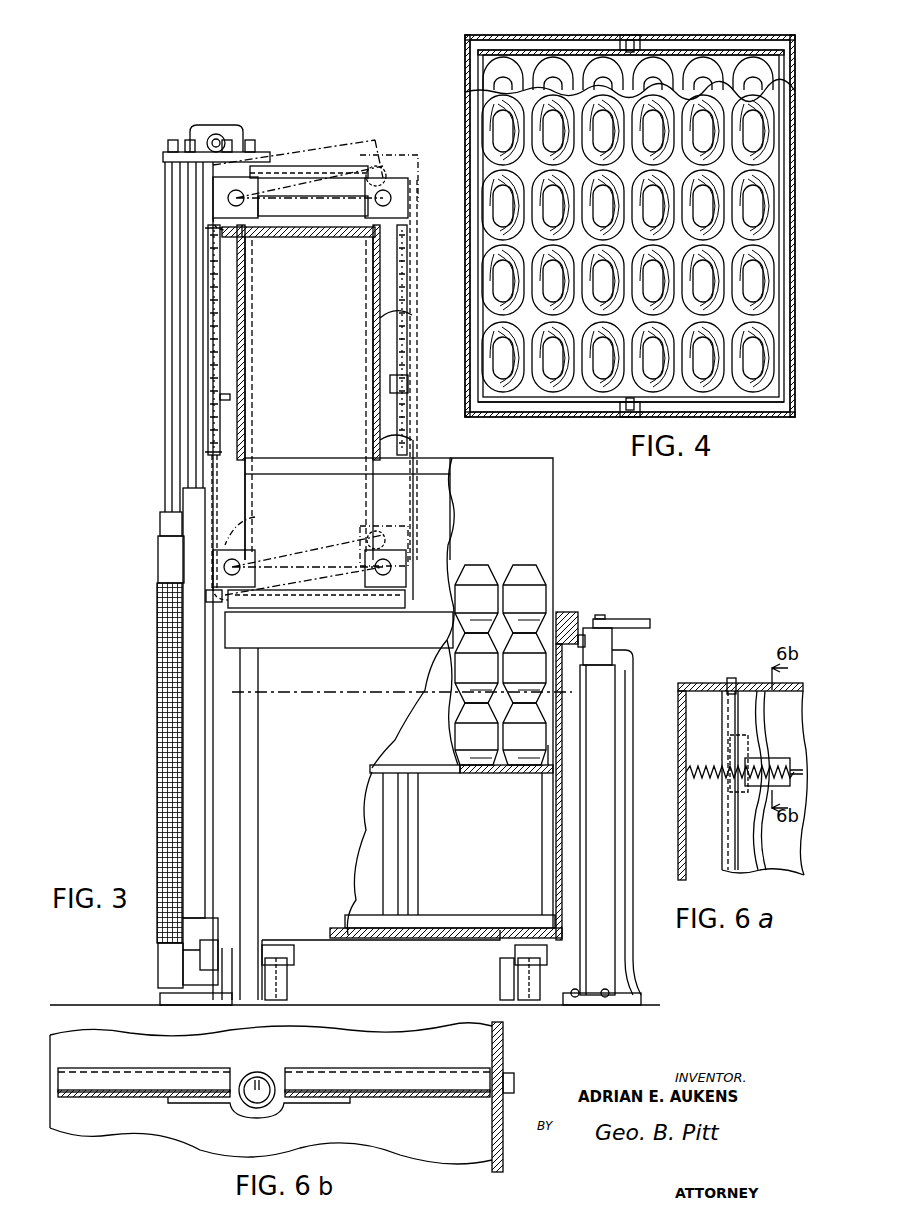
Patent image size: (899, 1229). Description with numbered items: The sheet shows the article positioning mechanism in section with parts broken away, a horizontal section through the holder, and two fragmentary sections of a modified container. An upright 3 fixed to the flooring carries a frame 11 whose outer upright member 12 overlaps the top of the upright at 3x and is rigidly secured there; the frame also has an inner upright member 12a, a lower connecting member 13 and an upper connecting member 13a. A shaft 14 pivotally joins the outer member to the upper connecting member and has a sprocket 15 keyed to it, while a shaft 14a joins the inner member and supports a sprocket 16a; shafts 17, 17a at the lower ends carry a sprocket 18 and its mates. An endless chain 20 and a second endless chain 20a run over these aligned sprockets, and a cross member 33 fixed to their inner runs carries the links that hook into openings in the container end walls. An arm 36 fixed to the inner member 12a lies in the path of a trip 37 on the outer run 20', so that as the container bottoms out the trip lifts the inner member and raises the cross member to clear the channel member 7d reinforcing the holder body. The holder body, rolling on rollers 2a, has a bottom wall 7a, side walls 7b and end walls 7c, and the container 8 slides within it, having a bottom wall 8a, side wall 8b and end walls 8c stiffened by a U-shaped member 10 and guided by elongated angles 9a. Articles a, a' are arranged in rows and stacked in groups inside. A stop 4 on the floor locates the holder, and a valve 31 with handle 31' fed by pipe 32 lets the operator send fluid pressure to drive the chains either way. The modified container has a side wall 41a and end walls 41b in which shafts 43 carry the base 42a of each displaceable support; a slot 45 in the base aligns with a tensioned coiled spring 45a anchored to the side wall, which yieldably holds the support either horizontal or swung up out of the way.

In FIG. 3, the upright 3 is at (158, 134).
In FIG. 3, the overlap of frame member and upright 3x is at (213, 605).
In FIG. 3, the shaft 14 is at (232, 198).
In FIG. 3, the shaft 14a is at (386, 196).
In FIG. 3, the upper connecting member 13a is at (300, 198).
In FIG. 3, the sprocket 15 is at (245, 228).
In FIG. 3, the arm 36 is at (308, 232).
In FIG. 3, the sprocket 16a is at (390, 540).
In FIG. 3, the inner upright member 12a is at (392, 295).
In FIG. 3, the endless chain 20 is at (241, 407).
In FIG. 3, the outer run of chain 20' is at (201, 340).
In FIG. 3, the outer upright member 12 is at (243, 337).
In FIG. 3, the frame 11 is at (280, 372).
In FIG. 3, the trip 37 is at (232, 393).
In FIG. 3, the endless chain 20a is at (398, 363).
In FIG. 3, the cross member 33 is at (398, 398).
In FIG. 3, the U-shaped member 10 is at (322, 465).
In FIG. 3, the sprocket 18 is at (245, 530).
In FIG. 3, the shaft 17 is at (238, 565).
In FIG. 3, the shaft 17a is at (380, 580).
In FIG. 3, the lower connecting member 13 is at (335, 605).
In FIG. 3, the channel member 7d is at (578, 603).
In FIG. 3, the container 8 is at (538, 523).
In FIG. 3, the article a is at (454, 655).
In FIG. 3, the article a' is at (537, 656).
In FIG. 3, the bottom wall 8a is at (488, 768).
In FIG. 4, the side wall 8b is at (478, 226).
In FIG. 3, the end wall 8c is at (432, 762).
In FIG. 4, the end wall 8c is at (550, 412).
In FIG. 3, the elongated angle 9a is at (420, 812).
In FIG. 4, the elongated angle 9a is at (640, 40).
In FIG. 3, the bottom wall 7a is at (372, 928).
In FIG. 3, the side wall 7b is at (455, 915).
In FIG. 4, the side wall 7b is at (730, 410).
In FIG. 4, the end wall 7c is at (795, 425).
In FIG. 3, the roller 2a is at (282, 995).
In FIG. 3, the valve 31 is at (621, 647).
In FIG. 3, the valve handle 31' is at (624, 610).
In FIG. 3, the pipe 32 is at (615, 900).
In FIG. 3, the stop 4 is at (576, 712).
In FIG. 3, the side wall 41a is at (686, 850).
In FIG. 6a, the side wall 41a is at (680, 848).
In FIG. 6a, the end wall 41b is at (702, 684).
In FIG. 6b, the end wall 41b is at (503, 1108).
In FIG. 6a, the base 42a is at (784, 855).
In FIG. 6b, the base 42a is at (374, 1068).
In FIG. 6a, the shaft 43 is at (730, 684).
In FIG. 6b, the shaft 43 is at (508, 1075).
In FIG. 6a, the slot 45 is at (785, 758).
In FIG. 6b, the slot 45 is at (240, 1055).
In FIG. 6a, the coiled spring 45a is at (704, 758).
In FIG. 6b, the coiled spring 45a is at (265, 1078).